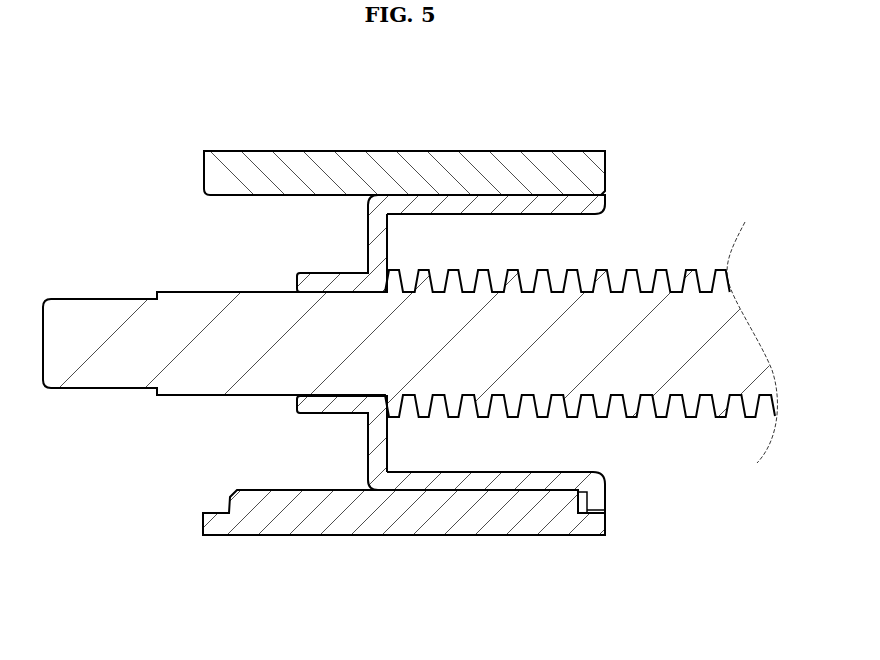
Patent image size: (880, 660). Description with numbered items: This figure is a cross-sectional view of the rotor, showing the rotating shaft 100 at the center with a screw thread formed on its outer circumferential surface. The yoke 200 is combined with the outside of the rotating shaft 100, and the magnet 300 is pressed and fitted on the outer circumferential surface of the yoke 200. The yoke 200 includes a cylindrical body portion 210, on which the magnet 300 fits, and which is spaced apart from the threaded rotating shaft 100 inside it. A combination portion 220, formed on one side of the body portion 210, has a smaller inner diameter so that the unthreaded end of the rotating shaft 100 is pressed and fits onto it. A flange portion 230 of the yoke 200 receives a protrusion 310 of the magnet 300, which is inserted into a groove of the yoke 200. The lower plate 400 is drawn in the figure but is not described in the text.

The rotating shaft 100 is at (108, 365).
The yoke 200 is at (442, 418).
The body portion 210 is at (465, 490).
The combination portion 220 is at (357, 410).
The flange portion 230 is at (589, 539).
The magnet 300 is at (288, 152).
The protrusion 310 is at (498, 173).
The lower plate 400 is at (404, 512).